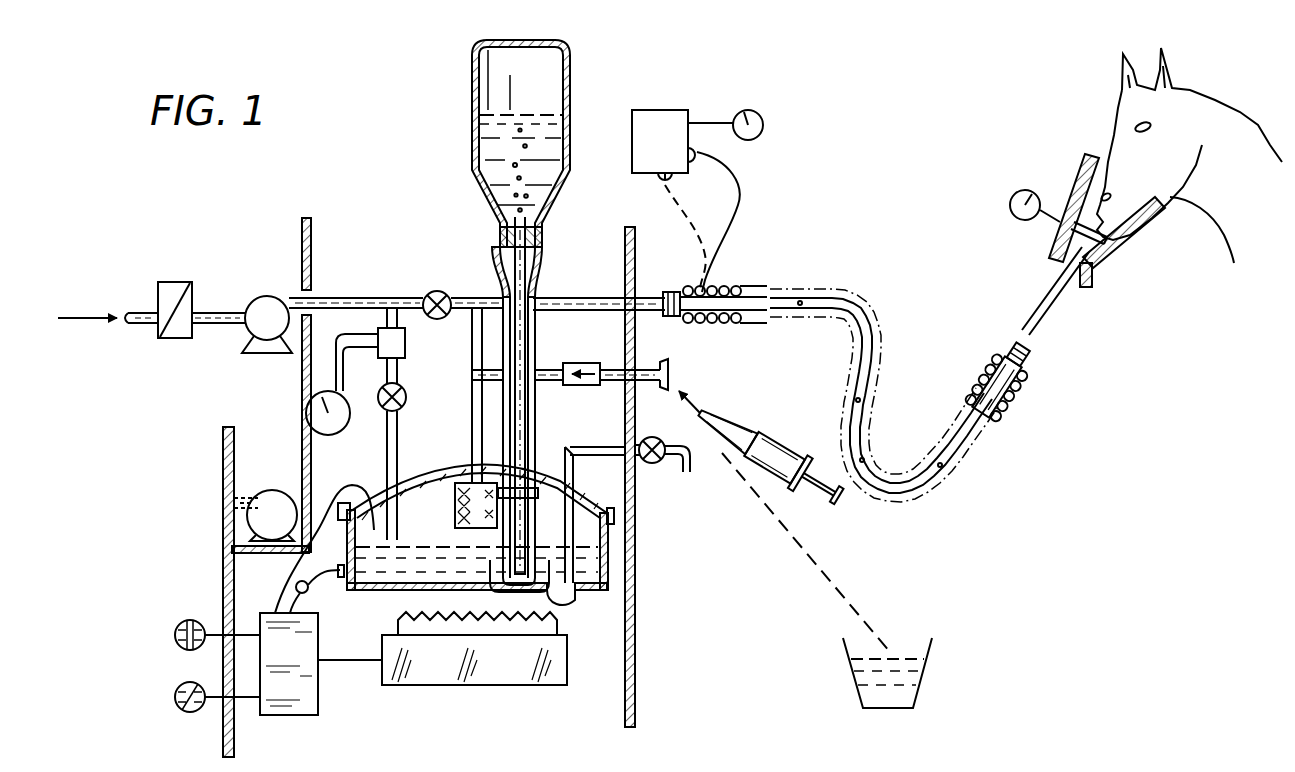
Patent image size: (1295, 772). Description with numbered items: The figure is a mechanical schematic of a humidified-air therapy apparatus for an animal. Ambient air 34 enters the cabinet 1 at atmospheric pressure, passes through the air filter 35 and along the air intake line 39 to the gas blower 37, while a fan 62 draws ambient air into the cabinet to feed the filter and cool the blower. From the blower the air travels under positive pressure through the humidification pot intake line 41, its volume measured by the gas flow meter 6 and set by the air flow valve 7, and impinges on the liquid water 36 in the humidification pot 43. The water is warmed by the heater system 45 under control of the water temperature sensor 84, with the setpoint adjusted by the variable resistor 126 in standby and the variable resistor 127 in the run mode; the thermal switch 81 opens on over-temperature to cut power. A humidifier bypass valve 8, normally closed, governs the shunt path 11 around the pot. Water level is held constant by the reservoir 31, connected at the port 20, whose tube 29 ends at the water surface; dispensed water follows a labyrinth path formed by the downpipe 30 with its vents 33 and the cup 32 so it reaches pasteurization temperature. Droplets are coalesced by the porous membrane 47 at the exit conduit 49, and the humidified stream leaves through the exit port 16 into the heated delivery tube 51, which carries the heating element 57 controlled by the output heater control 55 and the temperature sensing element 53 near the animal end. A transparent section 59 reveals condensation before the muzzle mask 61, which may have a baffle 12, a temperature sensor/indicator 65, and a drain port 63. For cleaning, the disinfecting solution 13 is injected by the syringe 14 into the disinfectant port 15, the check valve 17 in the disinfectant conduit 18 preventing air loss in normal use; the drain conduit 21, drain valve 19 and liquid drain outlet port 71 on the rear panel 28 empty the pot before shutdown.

The cabinet 1 is at (223, 460).
The gas flow meter 6 is at (307, 412).
The air flow valve 7 is at (403, 393).
The humidifier bypass valve 8 is at (432, 292).
The shunt path 11 is at (472, 297).
The baffle 12 is at (1128, 233).
The disinfecting solution 13 is at (905, 653).
The syringe 14 is at (790, 440).
The disinfectant port 15 is at (672, 374).
The exit port 16 is at (672, 292).
The check valve 17 is at (583, 362).
The disinfectant conduit 18 is at (552, 369).
The drain valve 19 is at (650, 464).
The port 20 is at (492, 232).
The drain conduit 21 is at (590, 532).
The rear panel 28 is at (638, 632).
The tube 29 is at (528, 410).
The downpipe 30 is at (536, 446).
The reservoir 31 is at (472, 137).
The cup 32 is at (560, 597).
The vents 33 is at (512, 505).
The ambient air 34 is at (84, 318).
The air filter 35 is at (172, 282).
The liquid water 36 is at (412, 568).
The gas blower 37 is at (267, 297).
The air intake line 39 is at (222, 312).
The humidification pot intake line 41 is at (403, 472).
The humidification pot 43 is at (293, 664).
The heater system 45 is at (540, 686).
The porous membrane 47 is at (455, 512).
The exit conduit 49 is at (586, 297).
The heated delivery tube 51 is at (875, 328).
The temperature sensing element 53 is at (668, 203).
The output heater control 55 is at (697, 145).
The heating element 57 is at (732, 202).
The transparent section 59 is at (1040, 300).
The muzzle mask 61 is at (1072, 180).
The fan 62 is at (276, 497).
The port 63 is at (1095, 285).
The temperature sensor/indicator 65 is at (1015, 194).
The liquid drain outlet port 71 is at (691, 472).
The thermal switch 81 is at (341, 573).
The water temperature sensor 84 is at (383, 503).
The variable resistor 126 is at (184, 622).
The variable resistor 127 is at (178, 688).